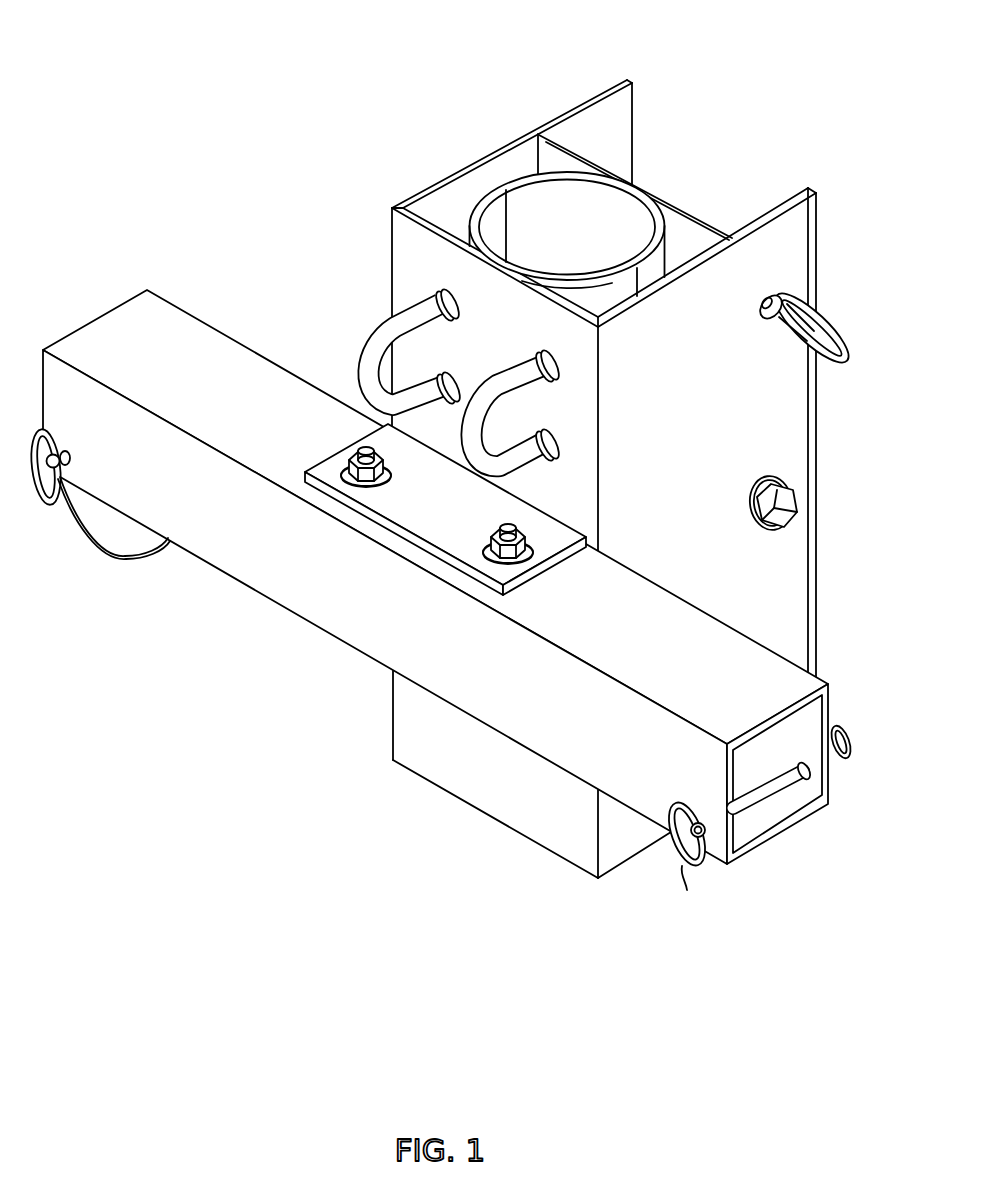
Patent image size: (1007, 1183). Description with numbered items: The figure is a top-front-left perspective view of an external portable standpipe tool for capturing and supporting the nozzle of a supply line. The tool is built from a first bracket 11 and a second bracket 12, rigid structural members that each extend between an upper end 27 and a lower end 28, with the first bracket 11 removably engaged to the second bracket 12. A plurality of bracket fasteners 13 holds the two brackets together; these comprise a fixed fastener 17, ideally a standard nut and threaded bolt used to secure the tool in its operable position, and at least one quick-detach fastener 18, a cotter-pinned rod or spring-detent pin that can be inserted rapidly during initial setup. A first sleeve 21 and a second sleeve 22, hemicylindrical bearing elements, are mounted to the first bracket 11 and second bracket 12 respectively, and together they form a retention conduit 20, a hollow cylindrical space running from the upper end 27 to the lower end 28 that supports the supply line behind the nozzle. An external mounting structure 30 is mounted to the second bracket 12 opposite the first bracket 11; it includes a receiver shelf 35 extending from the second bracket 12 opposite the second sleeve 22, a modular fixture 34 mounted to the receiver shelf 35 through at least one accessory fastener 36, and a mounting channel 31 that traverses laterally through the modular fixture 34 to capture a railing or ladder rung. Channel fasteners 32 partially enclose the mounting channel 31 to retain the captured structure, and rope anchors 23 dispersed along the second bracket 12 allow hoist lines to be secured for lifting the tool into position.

The first bracket 11 is at (625, 110).
The second bracket 12 is at (403, 197).
The bracket fasteners 13 is at (849, 499).
The fixed fastener 17 is at (794, 494).
The quick-detach fastener 18 is at (835, 337).
The retention conduit 20 is at (540, 203).
The first sleeve 21 is at (627, 200).
The second sleeve 22 is at (598, 297).
The rope anchors 23 is at (380, 350).
The upper end 27 is at (316, 205).
The lower end 28 is at (396, 836).
The external mounting structure 30 is at (359, 615).
The mounting channel 31 is at (789, 746).
The channel fasteners 32 is at (67, 533).
The modular fixture 34 is at (569, 733).
The receiver shelf 35 is at (431, 515).
The accessory fastener 36 is at (332, 457).